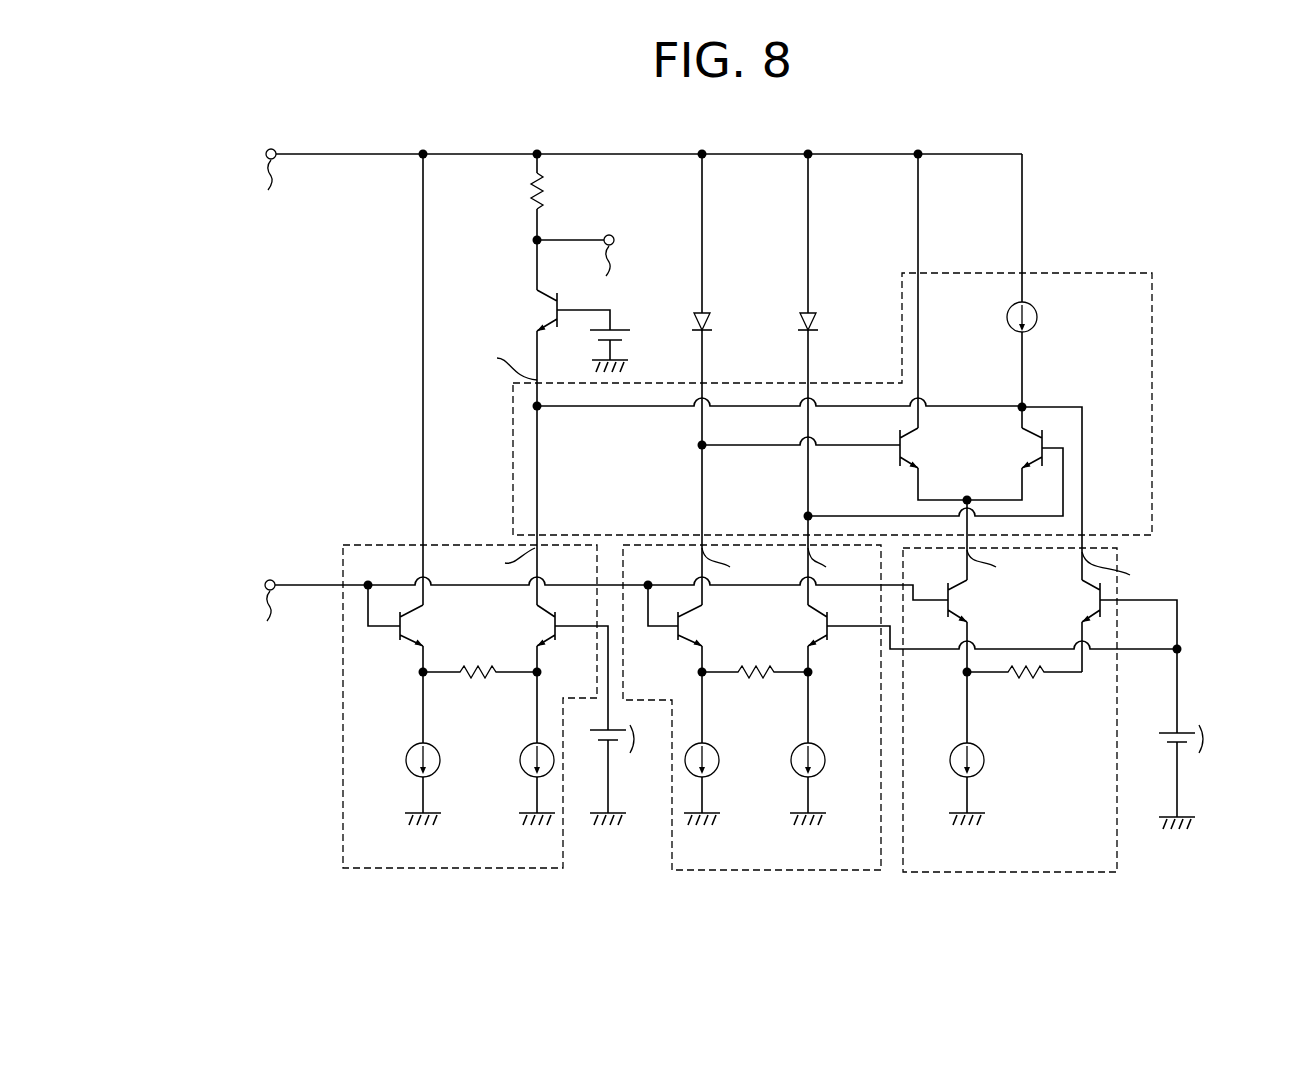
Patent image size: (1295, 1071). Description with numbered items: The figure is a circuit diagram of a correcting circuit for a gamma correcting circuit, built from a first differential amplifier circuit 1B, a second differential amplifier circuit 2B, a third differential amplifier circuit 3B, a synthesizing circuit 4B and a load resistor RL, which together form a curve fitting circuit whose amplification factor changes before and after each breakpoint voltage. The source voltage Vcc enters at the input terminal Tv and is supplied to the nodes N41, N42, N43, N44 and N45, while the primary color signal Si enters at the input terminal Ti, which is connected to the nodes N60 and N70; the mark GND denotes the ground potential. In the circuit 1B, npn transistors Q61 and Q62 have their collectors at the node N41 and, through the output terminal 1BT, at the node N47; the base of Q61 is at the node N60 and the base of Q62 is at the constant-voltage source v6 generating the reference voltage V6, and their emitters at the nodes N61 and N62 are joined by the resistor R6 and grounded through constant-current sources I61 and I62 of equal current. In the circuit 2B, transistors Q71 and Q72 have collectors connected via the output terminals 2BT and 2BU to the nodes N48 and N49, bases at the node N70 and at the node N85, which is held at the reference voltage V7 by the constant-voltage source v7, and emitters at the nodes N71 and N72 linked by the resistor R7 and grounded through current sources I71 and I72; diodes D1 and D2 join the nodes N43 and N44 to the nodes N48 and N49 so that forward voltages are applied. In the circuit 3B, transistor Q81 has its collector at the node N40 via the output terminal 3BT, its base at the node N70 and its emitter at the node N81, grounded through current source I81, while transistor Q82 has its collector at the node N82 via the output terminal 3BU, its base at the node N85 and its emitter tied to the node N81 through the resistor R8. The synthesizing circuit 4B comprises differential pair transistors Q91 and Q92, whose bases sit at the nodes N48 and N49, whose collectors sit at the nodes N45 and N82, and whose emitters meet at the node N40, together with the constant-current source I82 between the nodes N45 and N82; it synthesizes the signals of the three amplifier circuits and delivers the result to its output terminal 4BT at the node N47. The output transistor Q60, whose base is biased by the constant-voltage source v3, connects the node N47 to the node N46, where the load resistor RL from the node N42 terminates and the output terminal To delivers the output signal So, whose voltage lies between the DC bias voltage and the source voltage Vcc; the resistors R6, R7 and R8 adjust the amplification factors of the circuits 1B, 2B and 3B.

The source voltage Vcc is at (244, 153).
The input terminal for the source voltage Tv is at (272, 189).
The output signal So is at (628, 239).
The output terminal To is at (610, 274).
The primary color signal Si is at (251, 586).
The input terminal Ti is at (263, 620).
The node N40 is at (970, 486).
The node N41 is at (432, 138).
The node N42 is at (545, 138).
The node N43 is at (707, 138).
The node N44 is at (813, 138).
The node N45 is at (923, 138).
The node N46 is at (509, 239).
The node N47 is at (563, 422).
The node N48 is at (728, 460).
The node N49 is at (835, 505).
The node N60 is at (380, 570).
The node N61 is at (395, 671).
The node N62 is at (566, 671).
The node N70 is at (657, 570).
The node N71 is at (677, 671).
The node N72 is at (836, 671).
The node N81 is at (942, 671).
The node N82 is at (1049, 396).
The node N85 is at (1207, 649).
The load resistor RL is at (557, 194).
The resistor R6 is at (480, 688).
The resistor R7 is at (755, 688).
The resistor R8 is at (1024, 688).
The output transistor Q60 is at (523, 310).
The transistor Q61 is at (418, 615).
The transistor Q62 is at (524, 625).
The transistor Q71 is at (698, 615).
The transistor Q72 is at (797, 625).
The transistor Q81 is at (981, 601).
The transistor Q82 is at (1070, 601).
The transistor Q91 is at (931, 448).
The transistor Q92 is at (1008, 448).
The diode D1 is at (722, 321).
The diode D2 is at (829, 321).
The constant-current source I61 is at (404, 760).
The constant-current source I62 is at (517, 760).
The constant-current source I71 is at (717, 747).
The constant-current source I72 is at (786, 760).
The constant-current source I81 is at (948, 760).
The constant-current source I82 is at (1045, 317).
The constant-voltage source v3 is at (627, 339).
The constant-voltage source v6 is at (599, 750).
The reference voltage V6 is at (651, 741).
The constant-voltage source v7 is at (1162, 749).
The reference voltage V7 is at (1222, 740).
The ground potential GND is at (800, 608).
The first differential amplifier circuit 1B is at (472, 868).
The second differential amplifier circuit 2B is at (777, 870).
The third differential amplifier circuit 3B is at (1025, 872).
The synthesizing circuit 4B is at (1152, 405).
The output terminal 1BT is at (496, 563).
The output terminal 2BT is at (742, 563).
The output terminal 2BU is at (843, 563).
The output terminal 3BT is at (1007, 565).
The output terminal 3BU is at (1133, 571).
The output terminal of the synthesizing circuit 4BT is at (493, 362).